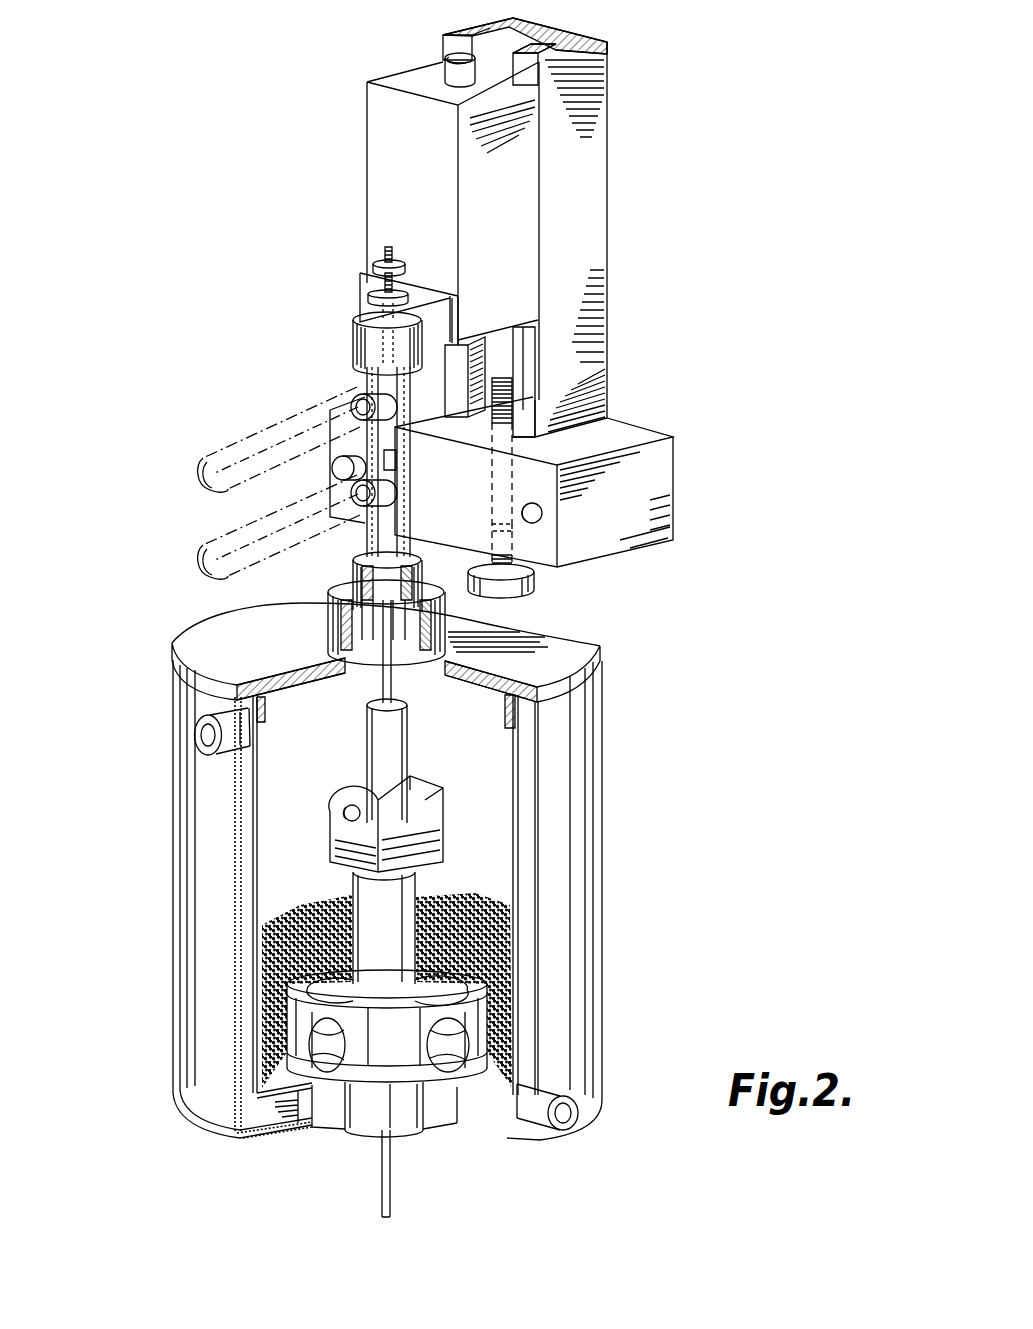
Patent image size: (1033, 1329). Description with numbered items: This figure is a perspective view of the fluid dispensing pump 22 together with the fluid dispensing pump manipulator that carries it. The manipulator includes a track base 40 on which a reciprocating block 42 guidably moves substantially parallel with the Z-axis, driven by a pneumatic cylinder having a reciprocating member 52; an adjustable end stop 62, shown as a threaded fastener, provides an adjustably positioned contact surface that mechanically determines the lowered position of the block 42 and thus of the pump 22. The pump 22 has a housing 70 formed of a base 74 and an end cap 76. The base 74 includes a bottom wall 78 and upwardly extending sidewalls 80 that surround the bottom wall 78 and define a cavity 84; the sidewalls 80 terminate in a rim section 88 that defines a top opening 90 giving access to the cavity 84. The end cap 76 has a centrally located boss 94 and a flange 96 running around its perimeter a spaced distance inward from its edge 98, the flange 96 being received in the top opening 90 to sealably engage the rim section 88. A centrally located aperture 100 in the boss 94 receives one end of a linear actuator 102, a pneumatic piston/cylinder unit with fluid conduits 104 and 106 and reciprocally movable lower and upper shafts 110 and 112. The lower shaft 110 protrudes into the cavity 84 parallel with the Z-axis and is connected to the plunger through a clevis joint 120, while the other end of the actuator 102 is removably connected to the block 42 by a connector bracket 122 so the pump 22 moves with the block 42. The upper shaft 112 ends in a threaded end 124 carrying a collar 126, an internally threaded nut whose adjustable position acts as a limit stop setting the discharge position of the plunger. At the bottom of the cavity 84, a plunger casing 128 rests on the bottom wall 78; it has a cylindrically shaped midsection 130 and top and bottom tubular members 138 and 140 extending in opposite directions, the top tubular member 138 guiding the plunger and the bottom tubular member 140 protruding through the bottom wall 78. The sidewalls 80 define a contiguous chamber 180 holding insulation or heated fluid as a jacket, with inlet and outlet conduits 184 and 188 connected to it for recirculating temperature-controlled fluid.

The fluid dispensing pump 22 is at (131, 716).
The track base 40 is at (607, 110).
The reciprocating block 42 is at (520, 225).
The reciprocating member 52 is at (455, 70).
The adjustable end stop 62 is at (505, 400).
The housing 70 is at (163, 756).
The base 74 is at (172, 818).
The end cap 76 is at (235, 632).
The bottom wall 78 is at (283, 1133).
The sidewalls 80 is at (240, 905).
The cavity 84 is at (467, 771).
The rim section 88 is at (548, 718).
The top opening 90 is at (520, 738).
The boss 94 is at (450, 617).
The flange 96 is at (226, 624).
The edge 98 is at (603, 660).
The aperture 100 is at (345, 650).
The linear actuator 102 is at (342, 379).
The fluid conduit 104 is at (270, 427).
The fluid conduit 106 is at (242, 520).
The lower shaft 110 is at (380, 690).
The upper shaft 112 is at (356, 362).
The clevis joint 120 is at (470, 838).
The connector bracket 122 is at (365, 300).
The threaded end 124 is at (385, 250).
The collar 126 is at (375, 267).
The plunger casing 128 is at (489, 972).
The cylindrically shaped midsection 130 is at (483, 1045).
The top tubular member 138 is at (415, 908).
The bottom tubular member 140 is at (410, 1125).
The chamber 180 is at (247, 1048).
The inlet conduit 184 is at (532, 1118).
The outlet conduit 188 is at (206, 708).